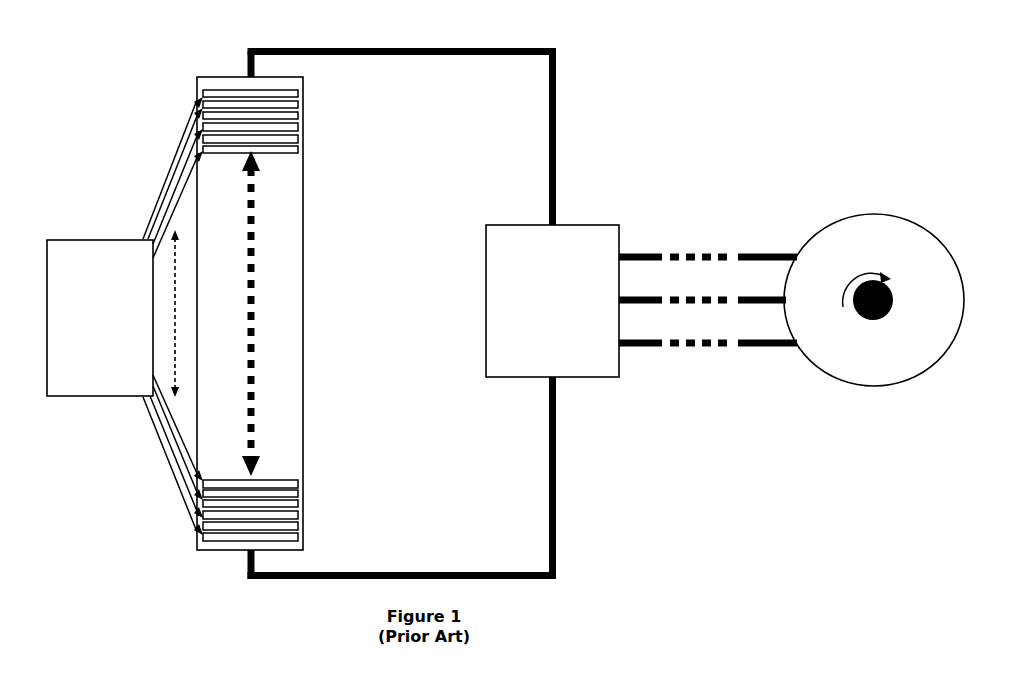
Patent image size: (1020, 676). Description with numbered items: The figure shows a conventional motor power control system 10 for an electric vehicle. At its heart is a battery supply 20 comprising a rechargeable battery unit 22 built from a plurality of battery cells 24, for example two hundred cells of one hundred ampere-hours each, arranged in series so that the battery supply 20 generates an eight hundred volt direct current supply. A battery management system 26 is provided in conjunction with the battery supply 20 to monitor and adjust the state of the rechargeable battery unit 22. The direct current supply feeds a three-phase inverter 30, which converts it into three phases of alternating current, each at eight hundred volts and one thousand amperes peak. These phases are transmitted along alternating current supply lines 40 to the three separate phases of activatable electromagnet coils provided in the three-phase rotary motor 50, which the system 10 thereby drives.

The motor power control system 10 is at (160, 587).
The battery supply 20 is at (186, 91).
The rechargeable battery unit 22 is at (202, 542).
The battery cells 24 is at (227, 90).
The battery management system 26 is at (74, 397).
The 3-phase inverter 30 is at (603, 377).
The supply lines 40 is at (757, 343).
The rotary motor 50 is at (915, 373).